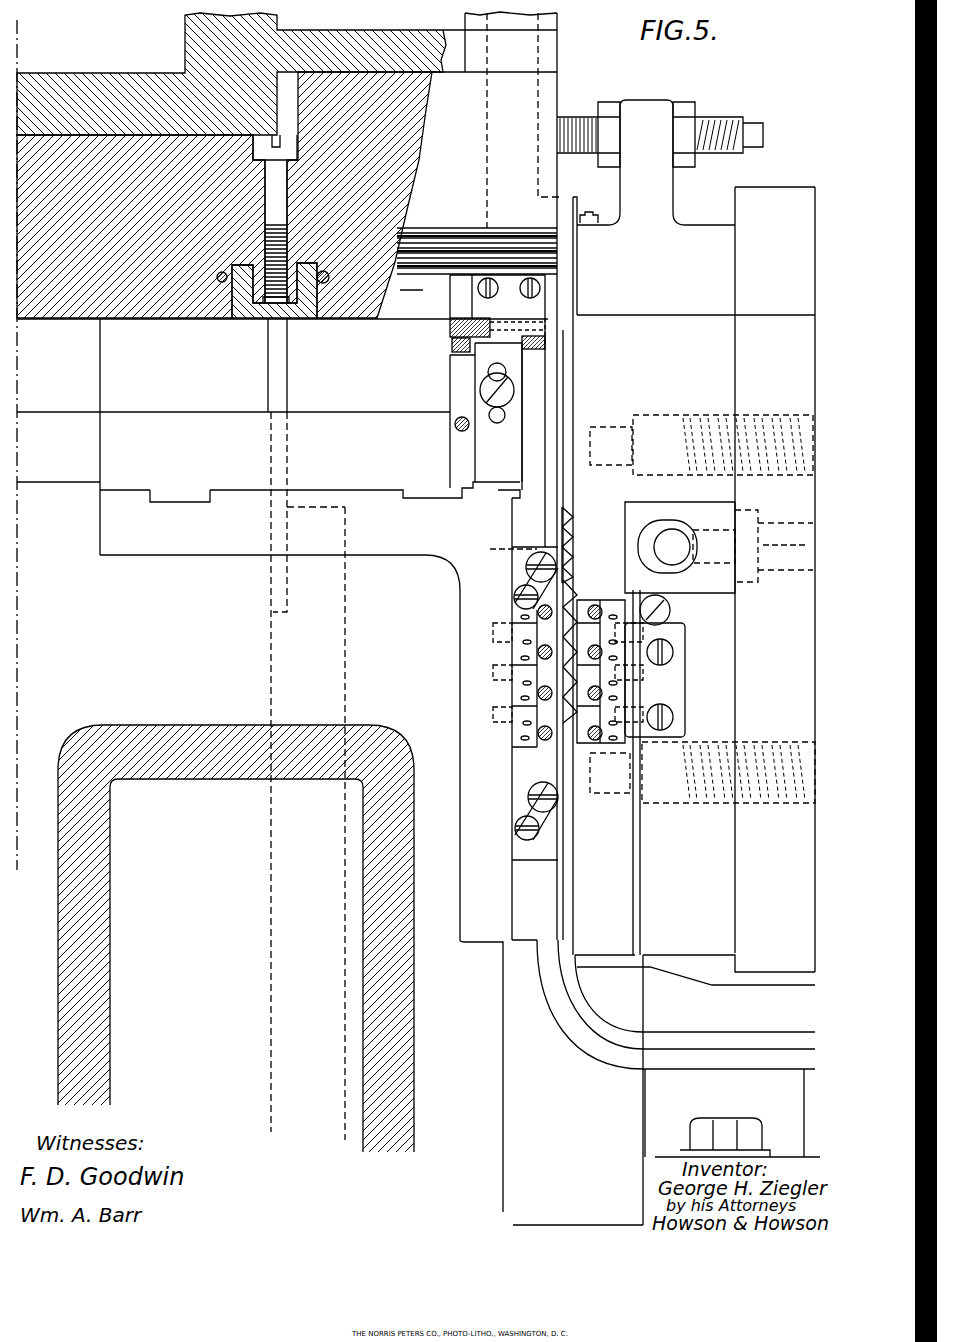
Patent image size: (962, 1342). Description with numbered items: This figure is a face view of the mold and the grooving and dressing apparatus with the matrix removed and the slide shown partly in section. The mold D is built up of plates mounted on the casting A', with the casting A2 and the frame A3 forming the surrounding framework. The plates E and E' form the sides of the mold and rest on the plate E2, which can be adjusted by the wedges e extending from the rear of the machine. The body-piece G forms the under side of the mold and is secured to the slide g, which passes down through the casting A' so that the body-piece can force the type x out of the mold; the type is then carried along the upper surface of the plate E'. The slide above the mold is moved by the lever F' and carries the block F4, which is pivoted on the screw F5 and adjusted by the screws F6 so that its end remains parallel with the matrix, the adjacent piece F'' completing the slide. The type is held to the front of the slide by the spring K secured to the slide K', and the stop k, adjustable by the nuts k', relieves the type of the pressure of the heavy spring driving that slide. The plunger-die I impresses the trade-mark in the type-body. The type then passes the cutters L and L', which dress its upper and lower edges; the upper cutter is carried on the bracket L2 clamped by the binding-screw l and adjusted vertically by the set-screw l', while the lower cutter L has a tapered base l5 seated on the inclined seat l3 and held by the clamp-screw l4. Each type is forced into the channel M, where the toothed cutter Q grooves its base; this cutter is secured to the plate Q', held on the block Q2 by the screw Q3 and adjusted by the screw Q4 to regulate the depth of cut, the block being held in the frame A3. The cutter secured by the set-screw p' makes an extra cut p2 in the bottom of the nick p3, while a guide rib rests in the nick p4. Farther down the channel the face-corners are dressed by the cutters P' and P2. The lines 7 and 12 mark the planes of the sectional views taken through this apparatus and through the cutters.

The lever F' is at (224, 195).
The nut plate F'' is at (274, 290).
The block F4 is at (222, 272).
The screw F5 is at (275, 219).
The screw F6 is at (328, 272).
The type x is at (268, 320).
The mold D is at (280, 325).
The body-piece G is at (275, 345).
The plate E is at (233, 437).
The plate E' is at (410, 421).
The plate E2 is at (268, 472).
The wedge e is at (197, 494).
The casting A' is at (301, 883).
The frame leg A2 is at (248, 938).
The frame A3 is at (666, 820).
The slide g is at (308, 776).
The cutter L is at (487, 296).
The cutter L' is at (497, 330).
The bracket L2 is at (488, 420).
The binding-screw l is at (497, 393).
The set-screw l' is at (448, 345).
The inclined seat l3 is at (531, 362).
The clamp-screw l4 is at (483, 357).
The tapered base l5 is at (545, 343).
The channel M is at (572, 394).
The plunger-die I is at (574, 211).
The spring K is at (587, 256).
The slide K' is at (696, 536).
The stop k is at (588, 132).
The nuts k' is at (718, 132).
The cutter Q is at (577, 541).
The plate Q' is at (655, 601).
The block Q2 is at (719, 547).
The screw Q3 is at (667, 546).
The screw Q4 is at (672, 547).
The section line 7 is at (646, 546).
The section line 12 is at (493, 672).
The cutter P' is at (525, 696).
The cutter P2 is at (624, 661).
The set-screw p' is at (541, 714).
The extra cut p2 is at (520, 714).
The nick p3 is at (604, 714).
The nick p4 is at (623, 714).